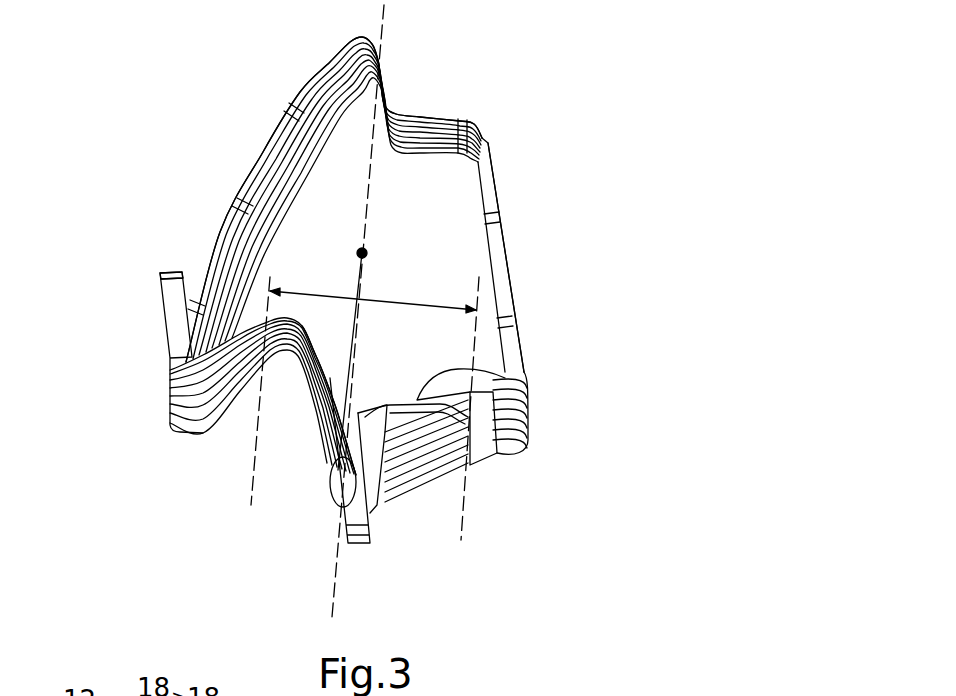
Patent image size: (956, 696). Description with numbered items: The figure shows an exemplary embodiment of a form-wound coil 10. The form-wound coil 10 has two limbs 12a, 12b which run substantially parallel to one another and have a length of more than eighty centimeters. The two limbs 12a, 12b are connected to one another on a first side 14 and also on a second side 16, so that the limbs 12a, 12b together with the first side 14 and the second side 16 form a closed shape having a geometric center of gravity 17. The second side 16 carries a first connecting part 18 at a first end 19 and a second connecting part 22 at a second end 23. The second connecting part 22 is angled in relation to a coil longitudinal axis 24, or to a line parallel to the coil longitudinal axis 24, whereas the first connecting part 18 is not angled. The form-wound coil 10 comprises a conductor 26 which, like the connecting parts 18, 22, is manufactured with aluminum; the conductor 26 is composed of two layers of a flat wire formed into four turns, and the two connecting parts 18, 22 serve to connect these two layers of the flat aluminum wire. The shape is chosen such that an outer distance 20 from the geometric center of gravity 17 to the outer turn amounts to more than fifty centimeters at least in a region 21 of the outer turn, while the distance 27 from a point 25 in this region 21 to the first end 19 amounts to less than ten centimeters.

The form-wound coil 10 is at (562, 221).
The limb 12a is at (255, 155).
The limb 12b is at (500, 168).
The first side 14 is at (290, 68).
The second side 16 is at (203, 437).
The geometric center of gravity 17 is at (368, 252).
The first connecting part 18 is at (370, 507).
The first end 19 is at (370, 548).
The outer distance 20 is at (345, 352).
The region 21 is at (402, 303).
The second connecting part 22 is at (170, 300).
The second end 23 is at (168, 262).
The coil longitudinal axis 24 is at (368, 153).
The point 25 is at (326, 385).
The conductor 26 is at (525, 372).
The distance 27 is at (370, 507).